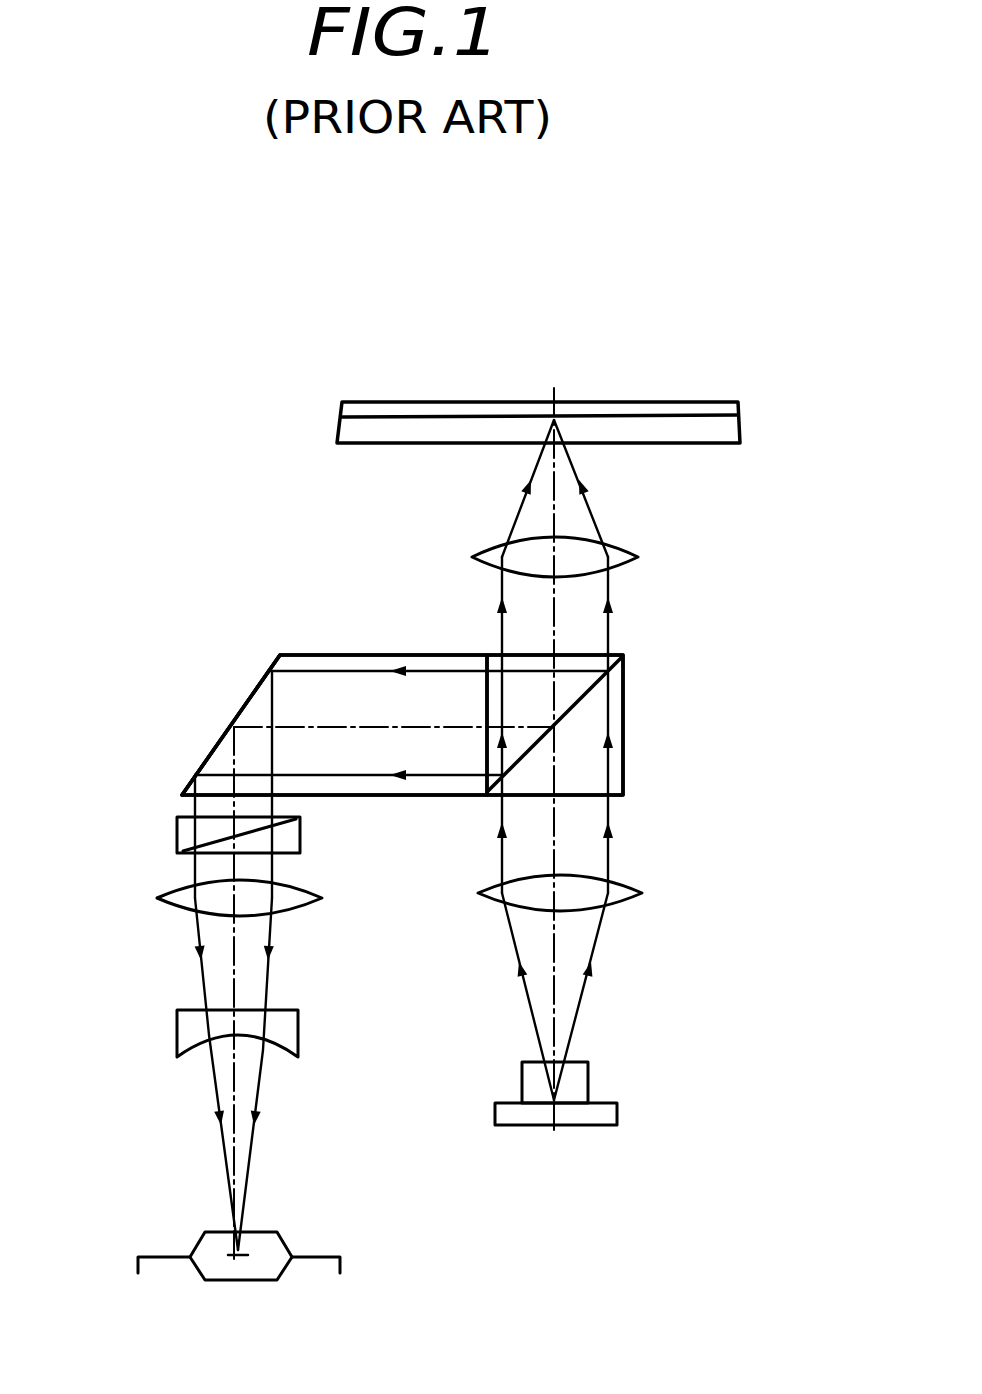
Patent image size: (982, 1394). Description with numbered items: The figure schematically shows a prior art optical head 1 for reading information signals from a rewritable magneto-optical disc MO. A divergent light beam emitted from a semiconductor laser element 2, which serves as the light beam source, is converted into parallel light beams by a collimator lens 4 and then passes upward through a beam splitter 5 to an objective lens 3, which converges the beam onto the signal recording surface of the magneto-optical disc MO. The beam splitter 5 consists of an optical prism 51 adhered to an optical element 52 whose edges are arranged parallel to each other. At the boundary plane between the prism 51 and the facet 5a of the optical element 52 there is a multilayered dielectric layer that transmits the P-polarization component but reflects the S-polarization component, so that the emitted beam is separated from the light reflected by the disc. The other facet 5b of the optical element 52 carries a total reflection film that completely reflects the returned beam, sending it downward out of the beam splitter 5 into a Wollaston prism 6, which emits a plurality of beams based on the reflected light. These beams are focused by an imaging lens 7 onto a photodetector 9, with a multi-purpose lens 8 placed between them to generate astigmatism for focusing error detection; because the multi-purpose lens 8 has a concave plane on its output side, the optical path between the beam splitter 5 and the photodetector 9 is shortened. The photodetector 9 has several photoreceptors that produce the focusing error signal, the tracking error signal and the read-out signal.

The optical head 1 is at (653, 338).
The magneto-optical disc MO is at (347, 402).
The semiconductor laser element 2 is at (588, 1073).
The objective lens 3 is at (640, 553).
The collimator lens 4 is at (632, 892).
The beam splitter 5 is at (628, 673).
The facet of the optical element 5a is at (578, 703).
The other facet of the optical element 5b is at (245, 705).
The optical prism 51 is at (625, 765).
The optical element 52 is at (308, 657).
The Wollaston prism 6 is at (178, 825).
The imaging lens 7 is at (170, 890).
The multi-purpose lens 8 is at (177, 1028).
The photodetector 9 is at (200, 1242).